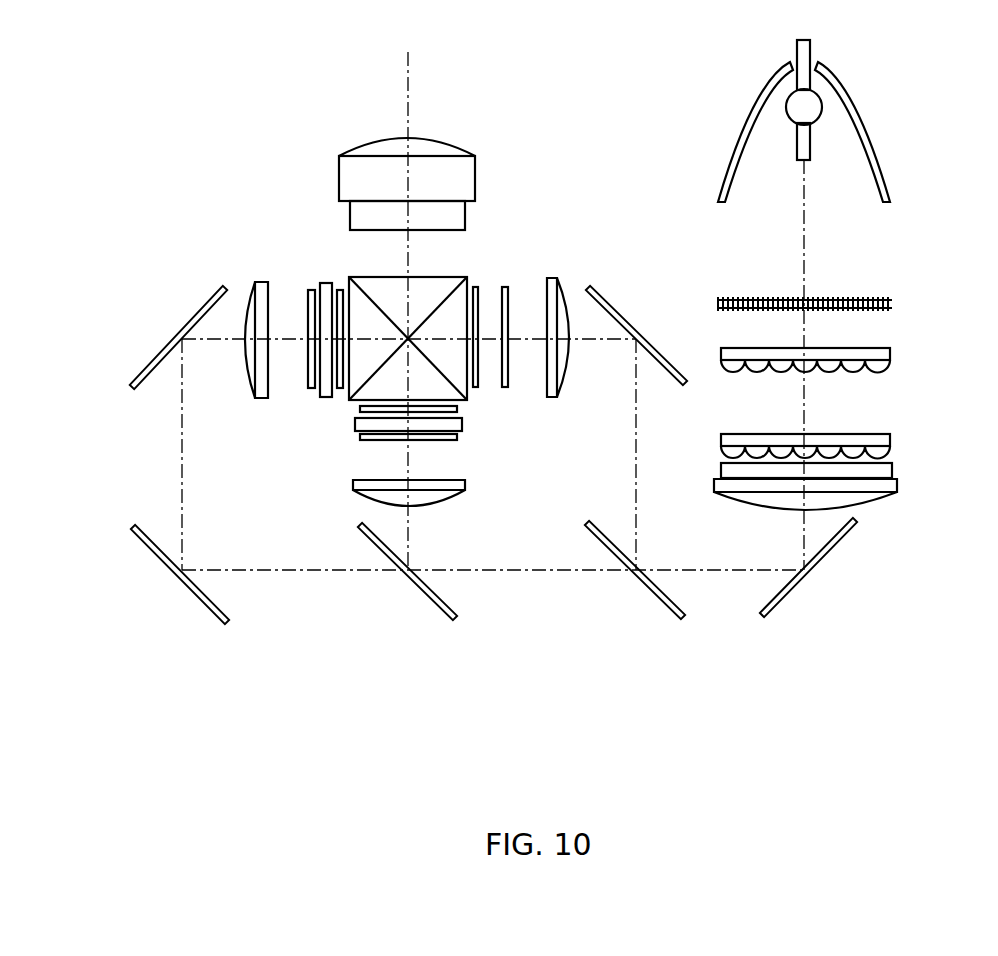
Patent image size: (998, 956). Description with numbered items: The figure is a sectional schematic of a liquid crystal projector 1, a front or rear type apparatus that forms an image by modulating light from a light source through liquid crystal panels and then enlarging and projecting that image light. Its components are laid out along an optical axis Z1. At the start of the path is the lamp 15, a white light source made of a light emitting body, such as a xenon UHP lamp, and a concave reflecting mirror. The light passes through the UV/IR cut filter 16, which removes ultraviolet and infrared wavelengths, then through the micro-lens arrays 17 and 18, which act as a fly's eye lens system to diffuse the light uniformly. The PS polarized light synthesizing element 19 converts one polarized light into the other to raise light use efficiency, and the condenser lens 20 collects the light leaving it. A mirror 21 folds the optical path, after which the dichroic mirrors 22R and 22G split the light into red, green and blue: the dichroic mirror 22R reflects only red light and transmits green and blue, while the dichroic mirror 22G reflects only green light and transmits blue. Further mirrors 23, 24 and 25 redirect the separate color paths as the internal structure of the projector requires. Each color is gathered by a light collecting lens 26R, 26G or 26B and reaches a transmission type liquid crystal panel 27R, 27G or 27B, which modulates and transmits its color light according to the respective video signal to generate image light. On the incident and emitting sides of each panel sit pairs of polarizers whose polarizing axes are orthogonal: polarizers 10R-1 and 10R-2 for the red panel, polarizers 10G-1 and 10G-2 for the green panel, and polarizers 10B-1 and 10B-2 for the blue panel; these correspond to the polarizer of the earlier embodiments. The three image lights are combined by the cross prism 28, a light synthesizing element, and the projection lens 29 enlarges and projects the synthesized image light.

The liquid crystal projector 1 is at (914, 690).
The lamp 15 is at (877, 118).
The UV/IR cut filter 16 is at (893, 303).
The micro-lens array 17 is at (890, 352).
The micro-lens array 18 is at (892, 440).
The PS polarized light synthesizing element 19 is at (892, 470).
The condenser lens 20 is at (898, 492).
The mirror 21 is at (842, 543).
The dichroic mirror 22G is at (427, 598).
The dichroic mirror 22R is at (652, 597).
The mirror 23 is at (198, 598).
The mirror 24 is at (626, 318).
The mirror 25 is at (143, 367).
The light collecting lens 26B is at (263, 290).
The light collecting lens 26G is at (465, 490).
The light collecting lens 26R is at (563, 378).
The liquid crystal panel 27B is at (325, 398).
The liquid crystal panel 27G is at (462, 428).
The liquid crystal panel 27R is at (431, 215).
The cross prism 28 is at (372, 285).
The projection lens 29 is at (393, 150).
The polarizer 10B-1 is at (312, 388).
The polarizer 10B-2 is at (339, 392).
The polarizer 10G-1 is at (462, 440).
The polarizer 10G-2 is at (460, 408).
The polarizer 10R-1 is at (506, 287).
The polarizer 10R-2 is at (476, 287).
The optical axis Z1 is at (410, 80).